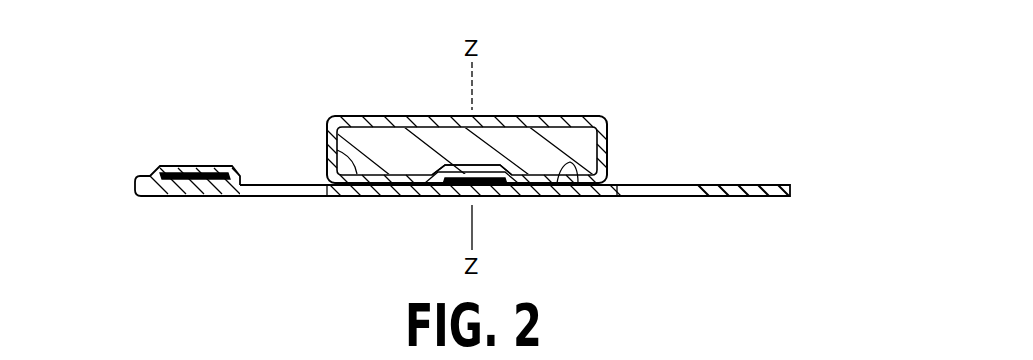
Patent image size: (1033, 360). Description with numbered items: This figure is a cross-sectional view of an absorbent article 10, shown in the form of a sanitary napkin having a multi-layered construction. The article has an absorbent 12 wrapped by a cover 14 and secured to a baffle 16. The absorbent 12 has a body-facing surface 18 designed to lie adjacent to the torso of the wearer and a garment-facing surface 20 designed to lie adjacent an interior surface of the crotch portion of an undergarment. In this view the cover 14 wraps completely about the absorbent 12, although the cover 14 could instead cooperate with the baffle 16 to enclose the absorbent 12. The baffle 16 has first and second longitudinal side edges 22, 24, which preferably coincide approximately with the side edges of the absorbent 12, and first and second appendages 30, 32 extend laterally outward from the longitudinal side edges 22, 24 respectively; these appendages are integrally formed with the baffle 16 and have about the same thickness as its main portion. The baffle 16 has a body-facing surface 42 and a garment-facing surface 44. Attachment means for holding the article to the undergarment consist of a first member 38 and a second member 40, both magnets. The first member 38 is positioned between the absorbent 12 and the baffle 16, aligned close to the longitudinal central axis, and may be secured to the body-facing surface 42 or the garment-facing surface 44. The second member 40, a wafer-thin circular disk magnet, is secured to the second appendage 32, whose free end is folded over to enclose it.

The absorbent article 10 is at (690, 47).
The absorbent 12 is at (565, 147).
The cover 14 is at (413, 116).
The baffle 16 is at (383, 197).
The body-facing surface 18 is at (503, 116).
The garment-facing surface 20 is at (337, 150).
The first longitudinal side edge 22 is at (613, 197).
The second longitudinal side edge 24 is at (320, 193).
The first appendage 30 is at (735, 185).
The second appendage 32 is at (247, 183).
The first member 38 is at (500, 200).
The second member 40 is at (187, 197).
The body-facing surface 42 is at (577, 200).
The garment-facing surface 44 is at (425, 195).